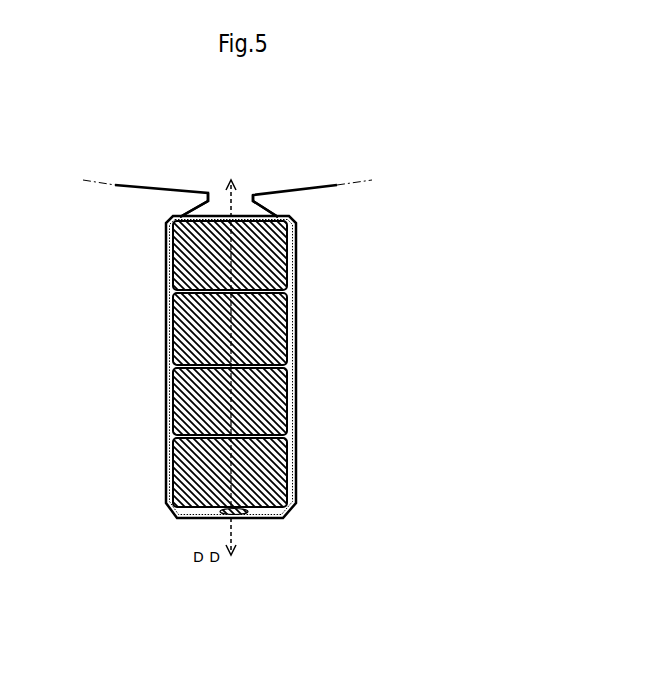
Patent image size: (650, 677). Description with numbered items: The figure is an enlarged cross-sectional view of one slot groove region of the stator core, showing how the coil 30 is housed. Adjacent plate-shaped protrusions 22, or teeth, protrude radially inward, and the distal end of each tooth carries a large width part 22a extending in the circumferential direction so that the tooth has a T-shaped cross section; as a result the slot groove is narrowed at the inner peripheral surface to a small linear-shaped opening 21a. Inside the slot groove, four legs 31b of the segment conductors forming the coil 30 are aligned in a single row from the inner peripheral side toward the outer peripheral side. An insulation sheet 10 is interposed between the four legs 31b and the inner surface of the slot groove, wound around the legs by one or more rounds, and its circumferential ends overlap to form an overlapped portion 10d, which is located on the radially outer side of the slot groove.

The insulation sheet 10 is at (293, 363).
The overlapped portion 10d is at (238, 517).
The coil 30 is at (319, 364).
The legs 31b is at (295, 323).
The plate-shaped protrusion 22 is at (145, 218).
The large width part 22a is at (277, 198).
The linear-shaped opening 21a is at (242, 198).